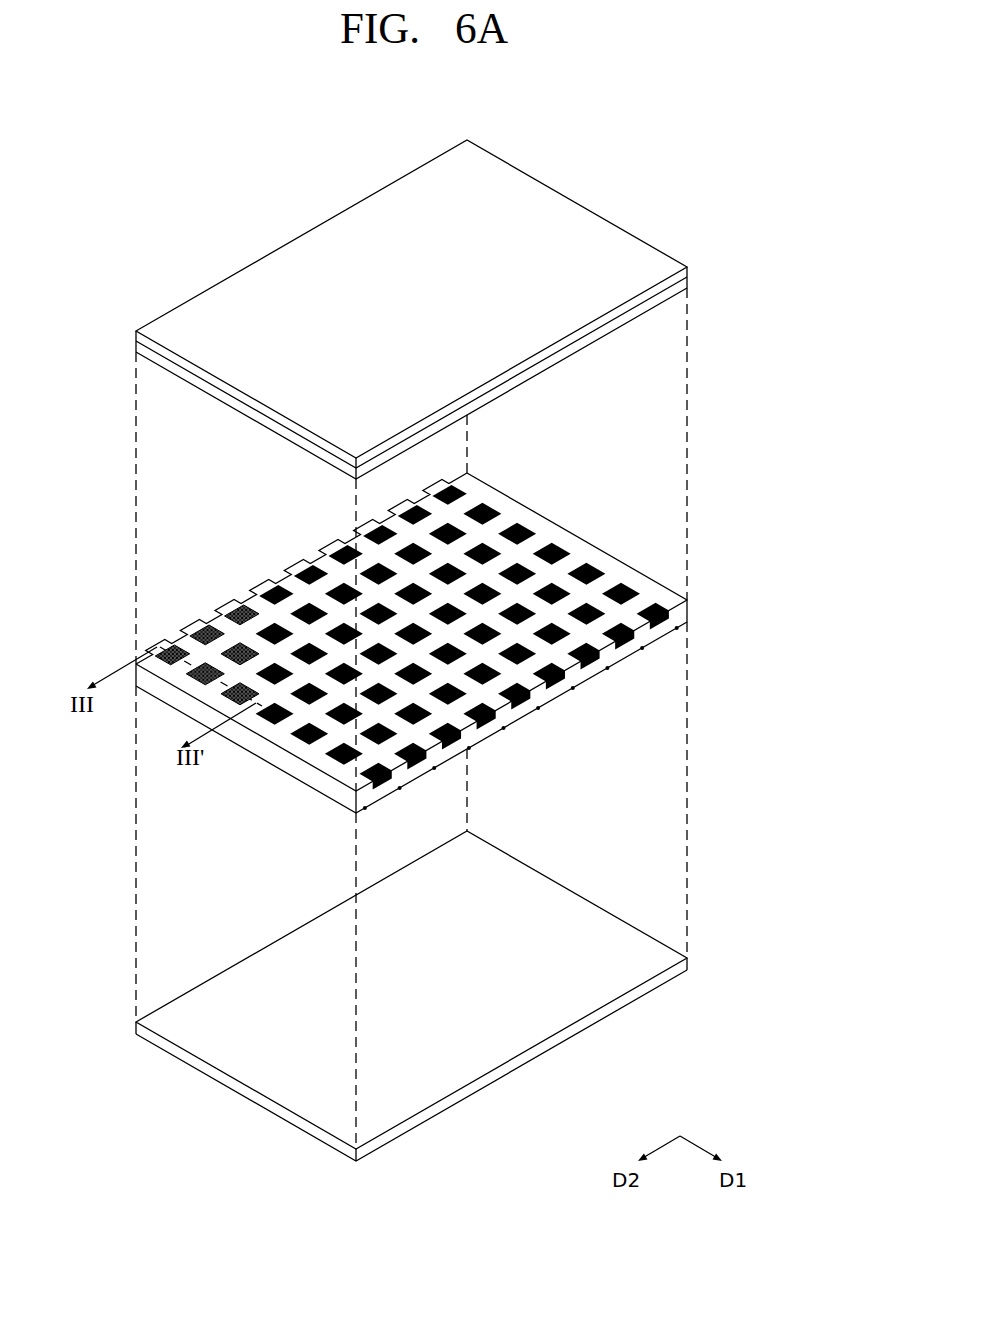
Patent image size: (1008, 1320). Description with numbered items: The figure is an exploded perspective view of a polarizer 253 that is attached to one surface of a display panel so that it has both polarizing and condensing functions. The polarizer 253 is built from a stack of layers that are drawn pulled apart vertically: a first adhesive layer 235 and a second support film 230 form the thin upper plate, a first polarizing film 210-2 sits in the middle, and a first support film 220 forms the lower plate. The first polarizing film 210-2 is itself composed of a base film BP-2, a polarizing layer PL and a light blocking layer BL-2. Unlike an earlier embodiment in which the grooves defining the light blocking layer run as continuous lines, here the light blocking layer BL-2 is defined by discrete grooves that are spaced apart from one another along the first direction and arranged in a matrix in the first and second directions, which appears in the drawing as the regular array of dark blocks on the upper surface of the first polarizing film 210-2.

The polarizer 253 is at (600, 146).
The first adhesive layer 235 is at (687, 273).
The second support film 230 is at (687, 285).
The first polarizing film 210-2 is at (506, 643).
The light blocking layer BL-2 is at (623, 584).
The base film BP-2 is at (652, 591).
The polarizing layer PL is at (697, 623).
The first support film 220 is at (688, 962).